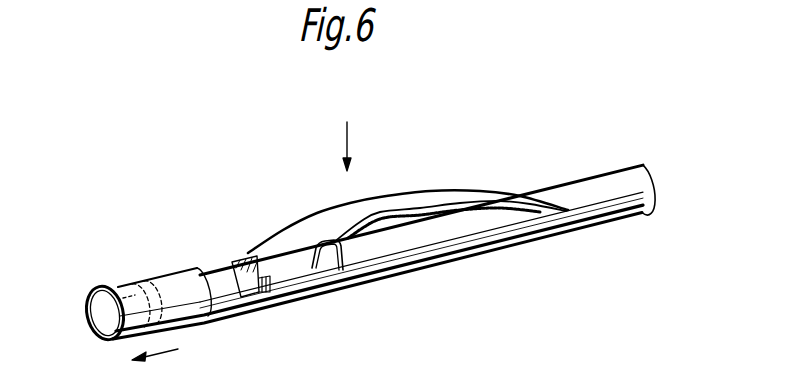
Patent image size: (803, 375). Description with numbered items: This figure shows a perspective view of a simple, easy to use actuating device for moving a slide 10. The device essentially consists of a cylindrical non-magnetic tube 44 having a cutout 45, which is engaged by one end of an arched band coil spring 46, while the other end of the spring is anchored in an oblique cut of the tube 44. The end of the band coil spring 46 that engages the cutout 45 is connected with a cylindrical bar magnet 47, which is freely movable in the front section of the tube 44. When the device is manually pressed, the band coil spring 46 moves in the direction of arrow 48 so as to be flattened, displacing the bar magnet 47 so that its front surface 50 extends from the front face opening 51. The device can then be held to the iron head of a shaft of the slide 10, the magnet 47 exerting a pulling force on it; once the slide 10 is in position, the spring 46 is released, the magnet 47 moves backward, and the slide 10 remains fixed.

The slide 10 is at (161, 362).
The cylindrical non-magnetic tube 44 is at (632, 185).
The cutout 45 is at (378, 278).
The arched band coil spring 46 is at (367, 198).
The cylindrical bar magnet 47 is at (221, 270).
The arrow 48 is at (334, 145).
The front surface 50 is at (138, 300).
The front face opening 51 is at (98, 305).